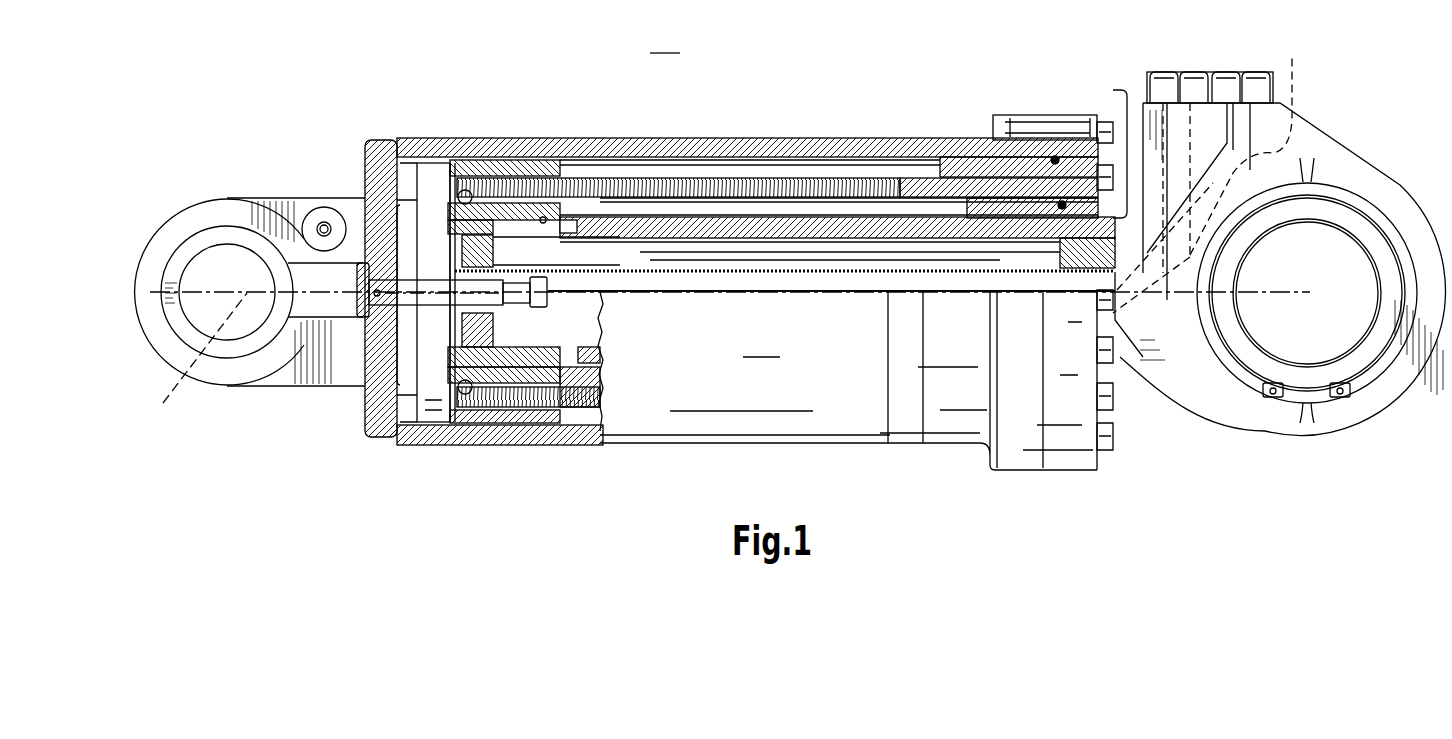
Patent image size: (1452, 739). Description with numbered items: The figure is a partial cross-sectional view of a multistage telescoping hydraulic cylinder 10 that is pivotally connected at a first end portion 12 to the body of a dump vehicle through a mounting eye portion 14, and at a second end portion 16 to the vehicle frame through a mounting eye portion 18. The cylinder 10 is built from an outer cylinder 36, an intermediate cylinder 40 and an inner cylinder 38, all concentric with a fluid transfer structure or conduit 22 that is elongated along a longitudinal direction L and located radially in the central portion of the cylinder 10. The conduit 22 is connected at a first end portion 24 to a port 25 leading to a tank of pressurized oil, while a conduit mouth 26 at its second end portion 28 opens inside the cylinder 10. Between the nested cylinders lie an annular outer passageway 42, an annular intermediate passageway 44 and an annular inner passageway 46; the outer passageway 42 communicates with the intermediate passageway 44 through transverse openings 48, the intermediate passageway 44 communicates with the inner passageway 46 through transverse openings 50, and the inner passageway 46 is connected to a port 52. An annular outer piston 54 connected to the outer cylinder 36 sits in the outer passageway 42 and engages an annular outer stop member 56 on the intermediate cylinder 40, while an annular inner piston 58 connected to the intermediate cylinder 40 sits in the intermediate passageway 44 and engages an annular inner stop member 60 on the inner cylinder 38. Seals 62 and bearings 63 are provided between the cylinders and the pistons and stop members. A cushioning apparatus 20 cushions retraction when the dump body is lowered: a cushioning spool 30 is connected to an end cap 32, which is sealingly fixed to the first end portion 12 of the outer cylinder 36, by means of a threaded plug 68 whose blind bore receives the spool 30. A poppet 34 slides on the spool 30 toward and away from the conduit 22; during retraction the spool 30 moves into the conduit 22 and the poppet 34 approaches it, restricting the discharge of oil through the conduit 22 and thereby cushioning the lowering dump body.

The multistage telescoping hydraulic cylinder 10 is at (665, 42).
The first end portion 12 is at (388, 165).
The mounting eye portion 14 is at (190, 213).
The second end portion 16 is at (1067, 437).
The mounting eye portion 18 is at (1305, 142).
The cushioning apparatus 20 is at (423, 333).
The fluid transfer structure or conduit 22 is at (600, 322).
The first end portion 24 is at (973, 280).
The port 25 is at (1153, 130).
The conduit mouth 26 is at (440, 270).
The second end portion 28 is at (515, 215).
The cushioning spool 30 is at (430, 283).
The end cap 32 is at (382, 340).
The poppet 34 is at (363, 198).
The outer cylinder 36 is at (822, 156).
The inner cylinder 38 is at (885, 225).
The intermediate cylinder 40 is at (765, 185).
The annular outer passageway 42 is at (673, 166).
The annular intermediate passageway 44 is at (840, 205).
The annular inner passageway 46 is at (900, 258).
The transverse openings 48 is at (575, 172).
The transverse openings 50 is at (572, 235).
The port 52 is at (1249, 143).
The annular outer piston 54 is at (1025, 140).
The annular outer stop member 56 is at (452, 240).
The annular inner piston 58 is at (990, 203).
The annular inner stop member 60 is at (560, 205).
The seals 62 is at (548, 205).
The bearings 63 is at (512, 265).
The plug 68 is at (360, 298).
The longitudinal direction L is at (195, 356).